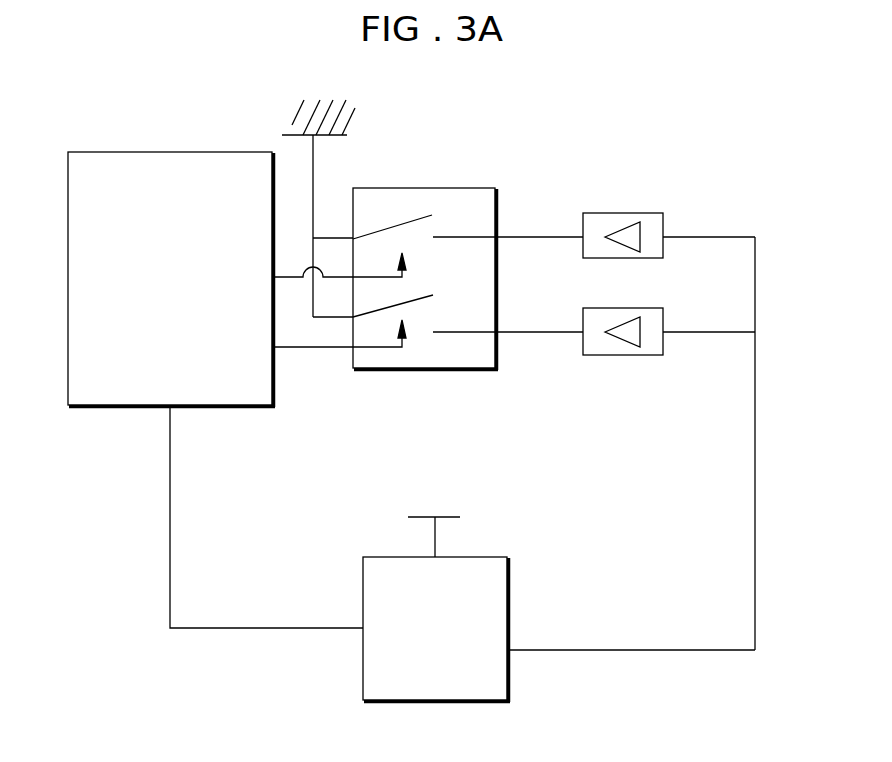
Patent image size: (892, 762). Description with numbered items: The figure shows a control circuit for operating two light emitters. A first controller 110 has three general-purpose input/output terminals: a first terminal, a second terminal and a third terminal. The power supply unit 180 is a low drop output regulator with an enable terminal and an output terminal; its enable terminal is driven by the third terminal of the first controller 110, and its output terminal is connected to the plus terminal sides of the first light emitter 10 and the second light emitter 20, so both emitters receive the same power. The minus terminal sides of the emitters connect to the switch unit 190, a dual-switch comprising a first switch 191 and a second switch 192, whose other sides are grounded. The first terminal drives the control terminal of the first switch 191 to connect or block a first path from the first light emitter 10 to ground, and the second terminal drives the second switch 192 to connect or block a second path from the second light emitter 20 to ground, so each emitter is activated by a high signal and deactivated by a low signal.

The first controller 110 is at (213, 151).
The switch unit 190 is at (468, 277).
The first switch 191 is at (432, 216).
The second switch 192 is at (415, 300).
The first light emitter 10 is at (652, 213).
The second light emitter 20 is at (652, 355).
The power supply unit 180 is at (503, 557).